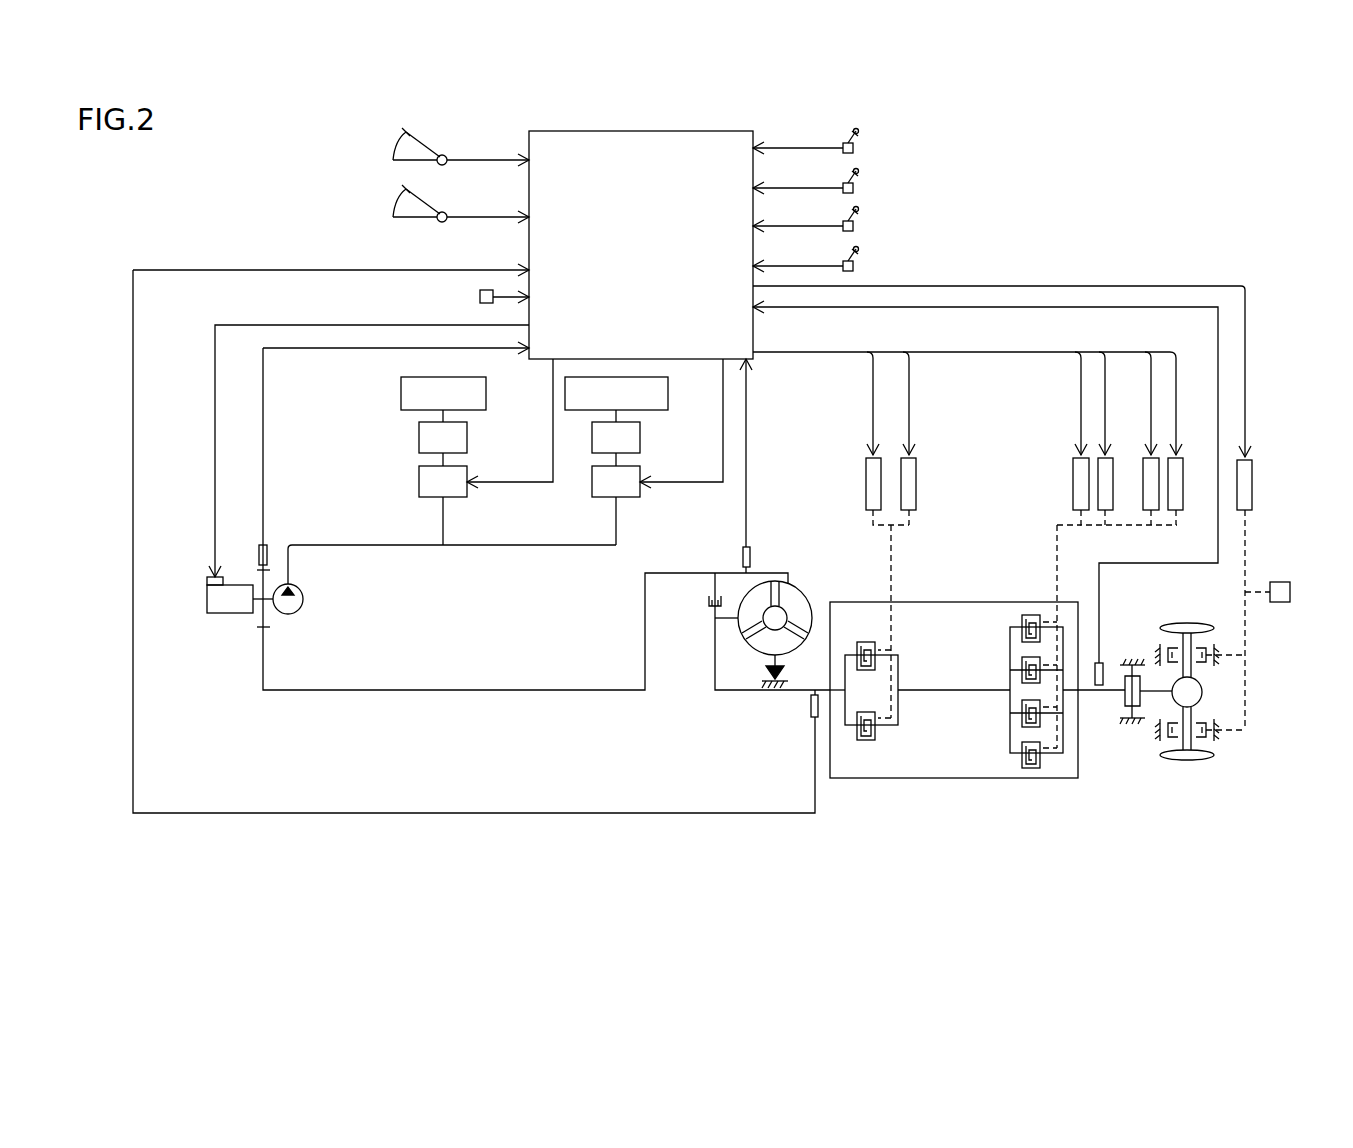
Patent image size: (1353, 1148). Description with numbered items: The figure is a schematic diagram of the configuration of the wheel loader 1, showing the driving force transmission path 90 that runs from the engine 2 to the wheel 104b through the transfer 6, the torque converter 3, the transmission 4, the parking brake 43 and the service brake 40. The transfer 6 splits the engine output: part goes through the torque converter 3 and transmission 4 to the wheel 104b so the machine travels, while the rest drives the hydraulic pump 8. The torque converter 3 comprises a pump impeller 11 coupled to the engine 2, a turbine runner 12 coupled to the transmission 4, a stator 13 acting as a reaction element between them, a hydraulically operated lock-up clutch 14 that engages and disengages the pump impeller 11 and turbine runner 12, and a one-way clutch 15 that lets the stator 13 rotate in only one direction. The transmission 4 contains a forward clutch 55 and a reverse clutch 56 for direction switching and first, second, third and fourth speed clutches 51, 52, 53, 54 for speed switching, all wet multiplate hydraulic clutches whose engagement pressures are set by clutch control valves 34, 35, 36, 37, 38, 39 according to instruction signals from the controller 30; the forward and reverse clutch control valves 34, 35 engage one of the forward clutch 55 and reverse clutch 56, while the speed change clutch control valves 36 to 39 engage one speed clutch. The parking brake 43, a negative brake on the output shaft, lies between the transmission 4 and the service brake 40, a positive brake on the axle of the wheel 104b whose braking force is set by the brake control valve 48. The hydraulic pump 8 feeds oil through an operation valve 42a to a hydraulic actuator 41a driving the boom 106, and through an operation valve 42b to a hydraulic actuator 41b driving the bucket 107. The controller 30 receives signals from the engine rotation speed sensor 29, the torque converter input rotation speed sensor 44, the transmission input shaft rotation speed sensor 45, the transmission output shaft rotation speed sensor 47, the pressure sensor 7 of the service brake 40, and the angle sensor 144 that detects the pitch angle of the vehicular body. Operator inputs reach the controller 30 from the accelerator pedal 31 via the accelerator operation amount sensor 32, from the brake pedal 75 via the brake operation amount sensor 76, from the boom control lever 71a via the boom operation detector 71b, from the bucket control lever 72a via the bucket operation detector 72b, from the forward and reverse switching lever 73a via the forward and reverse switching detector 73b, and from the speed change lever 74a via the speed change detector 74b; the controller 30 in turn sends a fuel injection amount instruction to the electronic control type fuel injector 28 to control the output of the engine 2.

The wheel loader 1 is at (1072, 227).
The engine 2 is at (207, 611).
The torque converter 3 is at (782, 604).
The transmission 4 is at (927, 602).
The transfer 6 is at (263, 661).
The pressure sensor 7 is at (1292, 592).
The hydraulic pump 8 is at (290, 616).
The pump impeller 11 is at (806, 606).
The turbine runner 12 is at (770, 583).
The stator 13 is at (757, 651).
The lock-up clutch 14 is at (709, 604).
The one-way clutch 15 is at (786, 677).
The electronic control type fuel injector 28 is at (207, 579).
The engine rotation speed sensor 29 is at (258, 552).
The controller 30 is at (708, 131).
The accelerator pedal 31 is at (423, 191).
The accelerator operation amount sensor 32 is at (447, 213).
The forward and reverse clutch control valve 34 is at (866, 470).
The forward and reverse clutch control valve 35 is at (916, 470).
The speed change clutch control valve 36 is at (1073, 491).
The speed change clutch control valve 37 is at (1113, 497).
The speed change clutch control valve 38 is at (1143, 470).
The speed change clutch control valve 39 is at (1183, 470).
The service brake 40 is at (1206, 662).
The hydraulic actuator 41a is at (419, 438).
The hydraulic actuator 41b is at (640, 438).
The operation valve 42a is at (419, 482).
The operation valve 42b is at (630, 497).
The parking brake 43 is at (1125, 700).
The torque converter input rotation speed sensor 44 is at (740, 557).
The transmission input shaft rotation speed sensor 45 is at (808, 712).
The transmission output shaft rotation speed sensor 47 is at (1105, 665).
The brake control valve 48 is at (1254, 481).
The first speed clutch 51 is at (1022, 753).
The second speed clutch 52 is at (1022, 715).
The third speed clutch 53 is at (1022, 668).
The fourth speed clutch 54 is at (1022, 632).
The forward clutch 55 is at (868, 642).
The reverse clutch 56 is at (878, 742).
The boom control lever 71a is at (853, 131).
The boom operation detector 71b is at (856, 148).
The bucket control lever 72a is at (853, 171).
The bucket operation detector 72b is at (856, 188).
The forward and reverse switching lever 73a is at (853, 209).
The forward and reverse switching detector 73b is at (856, 226).
The speed change lever 74a is at (853, 249).
The speed change detector 74b is at (856, 266).
The brake pedal 75 is at (423, 134).
The brake operation amount sensor 76 is at (447, 156).
The driving force transmission path 90 is at (193, 858).
The wheel 104b is at (1193, 623).
The boom 106 is at (401, 394).
The bucket 107 is at (668, 394).
The angle sensor 144 is at (480, 297).